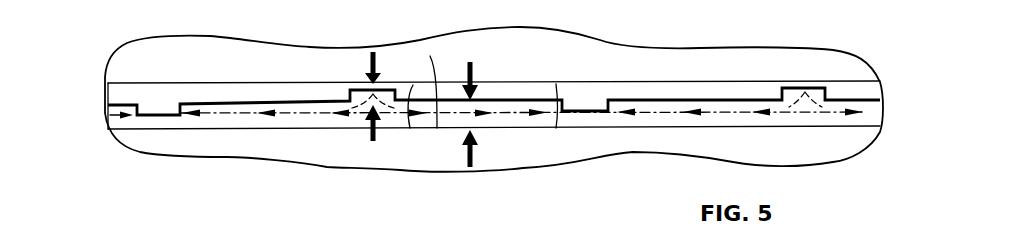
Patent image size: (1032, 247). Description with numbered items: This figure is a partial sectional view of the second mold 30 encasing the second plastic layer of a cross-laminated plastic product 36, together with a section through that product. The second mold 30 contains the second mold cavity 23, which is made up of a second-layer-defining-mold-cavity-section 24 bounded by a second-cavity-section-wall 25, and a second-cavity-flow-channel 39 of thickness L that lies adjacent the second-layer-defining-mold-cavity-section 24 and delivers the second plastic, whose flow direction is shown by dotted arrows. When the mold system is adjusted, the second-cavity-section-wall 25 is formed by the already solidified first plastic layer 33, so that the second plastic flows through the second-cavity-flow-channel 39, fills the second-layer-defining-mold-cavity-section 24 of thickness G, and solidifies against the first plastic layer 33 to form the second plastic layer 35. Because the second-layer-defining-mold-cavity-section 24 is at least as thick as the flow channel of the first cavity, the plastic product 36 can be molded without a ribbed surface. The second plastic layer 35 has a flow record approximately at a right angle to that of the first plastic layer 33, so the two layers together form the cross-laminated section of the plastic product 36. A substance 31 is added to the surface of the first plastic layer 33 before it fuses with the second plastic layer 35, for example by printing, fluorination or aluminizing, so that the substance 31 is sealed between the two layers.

The second mold 30 is at (115, 73).
The substance 31 is at (492, 100).
The first plastic layer 33 is at (528, 93).
The second plastic layer 35 is at (438, 115).
The plastic product 36 is at (247, 113).
The second-cavity-flow-channel 39 is at (353, 92).
The second mold cavity 23 is at (388, 80).
The second-layer-defining-mold-cavity-section 24 is at (508, 108).
The second-cavity-section-wall 25 is at (522, 93).